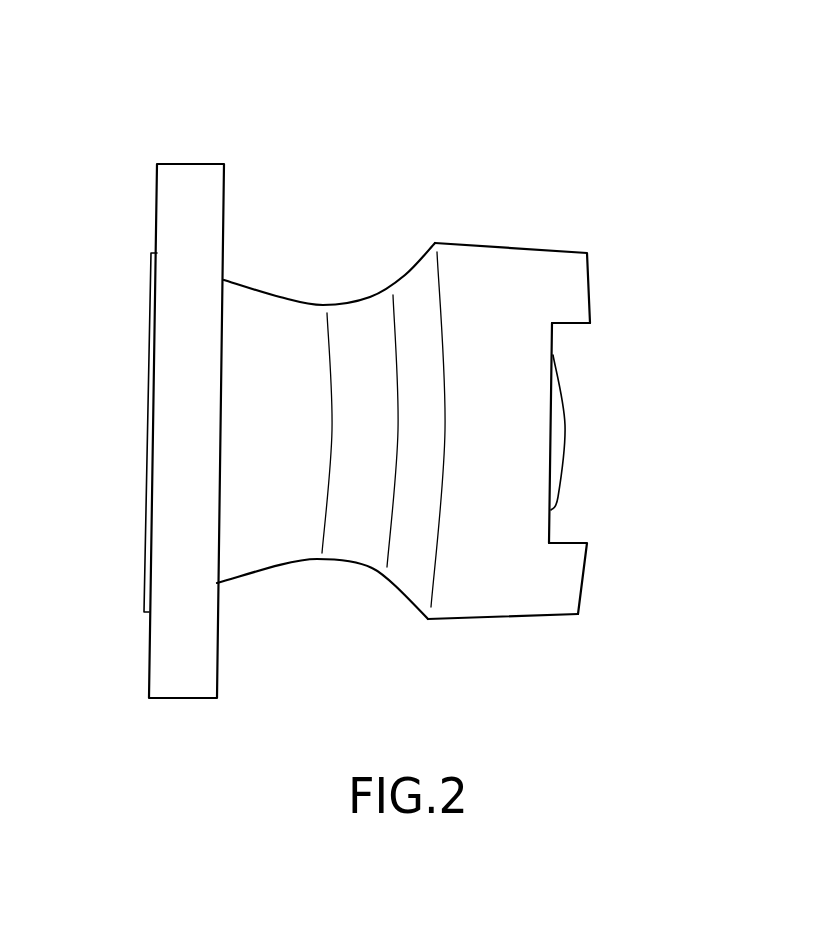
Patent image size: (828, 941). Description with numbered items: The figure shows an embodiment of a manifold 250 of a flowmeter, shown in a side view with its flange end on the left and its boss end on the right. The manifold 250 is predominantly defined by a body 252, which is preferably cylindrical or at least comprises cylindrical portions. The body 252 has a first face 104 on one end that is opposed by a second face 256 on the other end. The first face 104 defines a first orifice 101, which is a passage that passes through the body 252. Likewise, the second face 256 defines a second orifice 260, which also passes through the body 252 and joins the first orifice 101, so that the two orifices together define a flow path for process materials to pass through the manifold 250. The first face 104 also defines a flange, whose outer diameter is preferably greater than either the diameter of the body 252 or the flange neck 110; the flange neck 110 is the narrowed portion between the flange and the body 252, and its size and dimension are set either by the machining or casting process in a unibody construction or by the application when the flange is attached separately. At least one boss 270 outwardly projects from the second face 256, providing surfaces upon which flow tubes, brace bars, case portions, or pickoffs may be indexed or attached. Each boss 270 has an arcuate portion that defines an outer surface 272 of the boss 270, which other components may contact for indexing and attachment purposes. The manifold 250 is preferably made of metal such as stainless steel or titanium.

The manifold 250 is at (301, 112).
The first orifice 101 is at (134, 431).
The first face 104 is at (150, 272).
The flange neck 110 is at (268, 312).
The body 252 is at (422, 285).
The boss 270 is at (577, 290).
The second face 256 is at (552, 345).
The second orifice 260 is at (582, 421).
The outer surface 272 is at (568, 614).